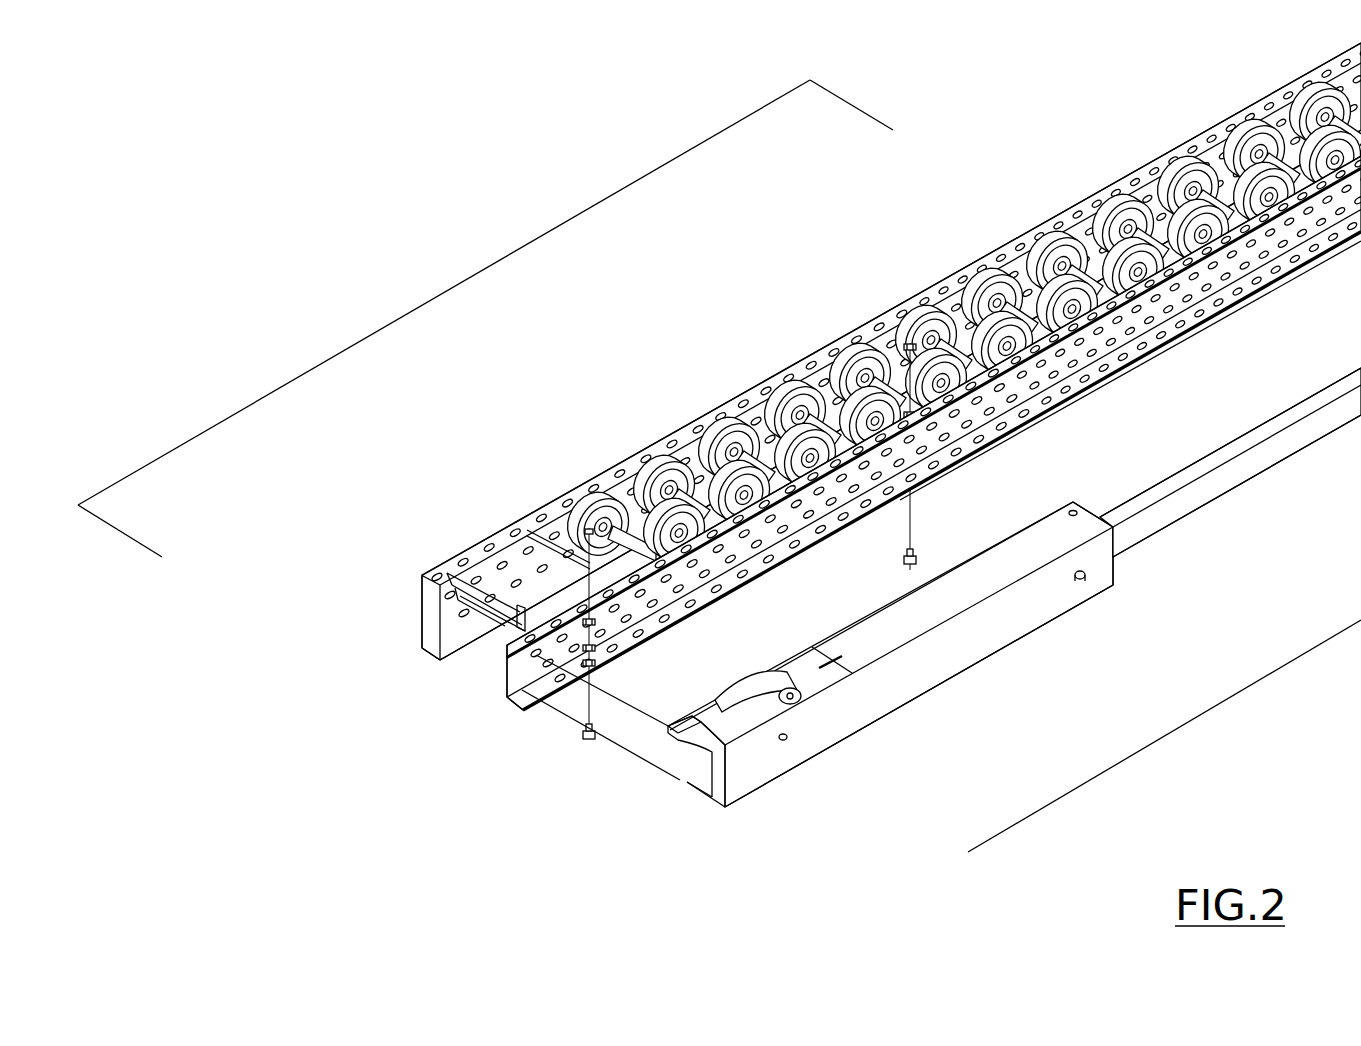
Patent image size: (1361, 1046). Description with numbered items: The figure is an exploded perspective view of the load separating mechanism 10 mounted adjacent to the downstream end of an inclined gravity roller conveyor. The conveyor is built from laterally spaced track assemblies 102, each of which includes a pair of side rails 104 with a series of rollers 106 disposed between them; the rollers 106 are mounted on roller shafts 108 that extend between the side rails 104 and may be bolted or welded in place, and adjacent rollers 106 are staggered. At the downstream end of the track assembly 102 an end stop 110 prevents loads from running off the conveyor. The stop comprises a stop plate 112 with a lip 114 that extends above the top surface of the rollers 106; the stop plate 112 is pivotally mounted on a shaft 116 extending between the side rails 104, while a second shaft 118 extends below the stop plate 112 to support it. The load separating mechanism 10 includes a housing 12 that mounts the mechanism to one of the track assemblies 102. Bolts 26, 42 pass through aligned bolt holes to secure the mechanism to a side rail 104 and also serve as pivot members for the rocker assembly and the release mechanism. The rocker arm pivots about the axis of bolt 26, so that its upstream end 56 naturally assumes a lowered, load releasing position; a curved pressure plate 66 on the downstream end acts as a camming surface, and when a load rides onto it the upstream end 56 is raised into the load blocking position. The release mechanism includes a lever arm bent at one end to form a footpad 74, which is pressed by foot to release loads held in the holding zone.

The load separating mechanism 10 is at (1164, 736).
The housing 12 is at (832, 663).
The bolt 26 is at (1130, 619).
The bolt 42 is at (873, 779).
The upstream end 56 is at (1230, 475).
The pressure plate 66 is at (754, 677).
The footpad 74 is at (602, 770).
The track assembly 102 is at (447, 292).
The side rail 104 is at (891, 348).
The roller 106 is at (964, 343).
The roller shaft 108 is at (984, 362).
The end stop 110 is at (401, 590).
The stop plate 112 is at (420, 565).
The lip 114 is at (420, 618).
The shaft 116 is at (299, 637).
The shaft 118 is at (410, 585).